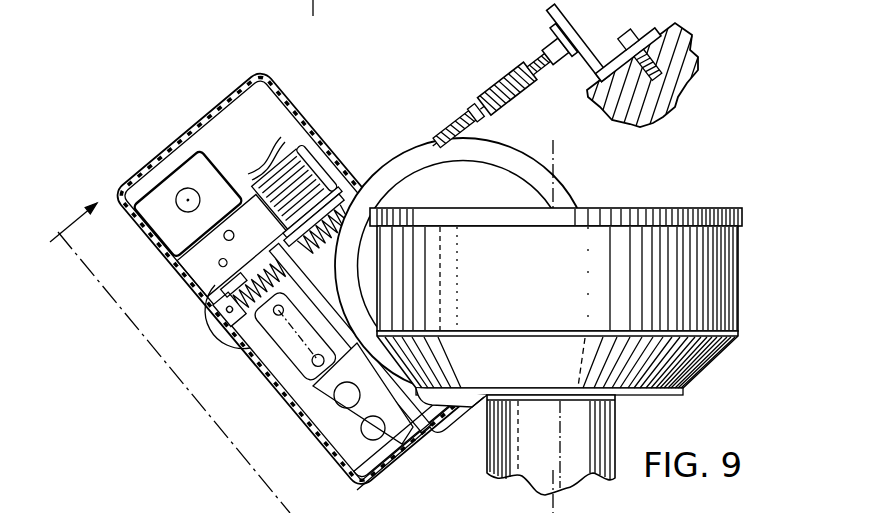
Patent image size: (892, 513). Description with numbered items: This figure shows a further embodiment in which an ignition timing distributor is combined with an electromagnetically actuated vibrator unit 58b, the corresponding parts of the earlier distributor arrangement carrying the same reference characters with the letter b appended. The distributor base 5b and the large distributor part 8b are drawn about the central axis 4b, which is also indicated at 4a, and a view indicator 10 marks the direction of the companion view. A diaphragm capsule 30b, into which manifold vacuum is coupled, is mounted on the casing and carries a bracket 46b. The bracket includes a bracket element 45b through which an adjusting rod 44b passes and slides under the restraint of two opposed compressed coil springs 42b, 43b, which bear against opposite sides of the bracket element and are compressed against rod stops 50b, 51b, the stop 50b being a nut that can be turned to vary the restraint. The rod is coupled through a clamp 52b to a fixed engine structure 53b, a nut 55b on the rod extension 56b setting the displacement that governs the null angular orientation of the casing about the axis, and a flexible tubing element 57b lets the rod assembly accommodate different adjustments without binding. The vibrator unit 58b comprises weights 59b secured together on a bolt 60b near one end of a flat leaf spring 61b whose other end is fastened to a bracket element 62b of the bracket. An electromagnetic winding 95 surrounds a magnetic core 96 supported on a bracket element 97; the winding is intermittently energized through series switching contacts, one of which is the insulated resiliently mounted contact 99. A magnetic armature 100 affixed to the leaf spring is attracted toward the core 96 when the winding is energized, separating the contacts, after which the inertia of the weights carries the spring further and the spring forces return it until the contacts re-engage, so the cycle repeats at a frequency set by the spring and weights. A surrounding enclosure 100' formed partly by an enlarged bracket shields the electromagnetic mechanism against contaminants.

The section axis 4a is at (315, 20).
The central axis 4b is at (576, 501).
The distributor base 5b is at (488, 461).
The cup body 8b is at (540, 276).
The section line 10 is at (165, 358).
The diaphragm capsule 30b is at (478, 198).
The compressed coil spring 42b is at (336, 200).
The compressed coil spring 43b is at (213, 295).
The adjusting rod 44b is at (246, 356).
The bracket element 45b is at (320, 282).
The bracket 46b is at (447, 427).
The rod stop 50b is at (352, 210).
The rod stop 51b is at (228, 323).
The clamp 52b is at (604, 48).
The engine structure 53b is at (663, 98).
The nut 55b is at (552, 32).
The rod extension 56b is at (552, 63).
The flexible tubing element 57b is at (500, 88).
The vibrator unit 58b is at (188, 104).
The weights 59b is at (197, 236).
The bolt 60b is at (186, 194).
The leaf spring 61b is at (233, 287).
The bracket element 62b is at (410, 430).
The electromagnetic winding 95 is at (293, 158).
The magnetic core 96 is at (300, 182).
The bracket element 97 is at (320, 190).
The insulated resiliently-mounted contact 99 is at (280, 320).
The magnetic armature 100 is at (231, 246).
The surrounding enclosure 100' is at (307, 73).